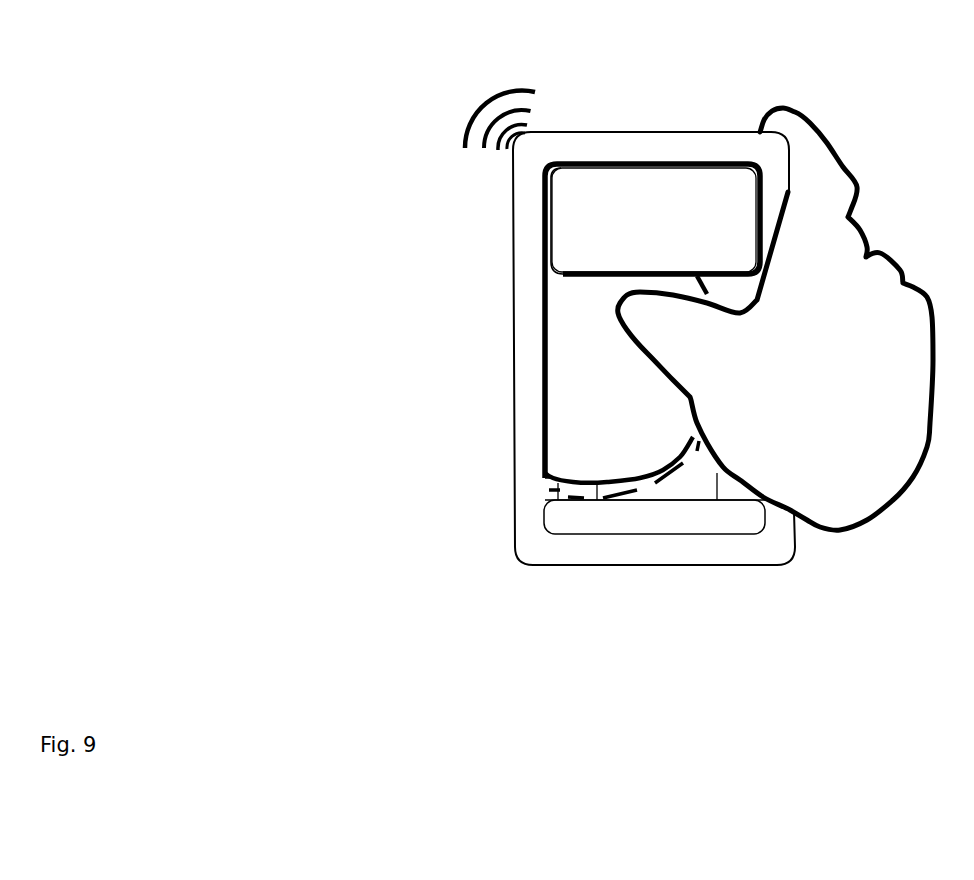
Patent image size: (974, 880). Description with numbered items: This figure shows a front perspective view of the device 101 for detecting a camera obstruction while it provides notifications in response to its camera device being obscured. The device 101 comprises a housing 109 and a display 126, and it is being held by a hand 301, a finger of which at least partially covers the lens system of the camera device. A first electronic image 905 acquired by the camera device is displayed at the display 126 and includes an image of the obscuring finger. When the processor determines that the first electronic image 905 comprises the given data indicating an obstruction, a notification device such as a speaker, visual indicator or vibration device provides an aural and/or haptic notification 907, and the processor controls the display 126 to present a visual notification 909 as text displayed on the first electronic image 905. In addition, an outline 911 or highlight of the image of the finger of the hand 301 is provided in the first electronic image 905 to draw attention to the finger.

The device 101 is at (656, 131).
The housing 109 is at (576, 564).
The display 126 is at (678, 529).
The hand 301 is at (838, 429).
The first electronic image 905 is at (569, 374).
The aural and/or haptic notification 907 is at (463, 147).
The visual notification 909 is at (562, 207).
The outline 911 is at (560, 498).